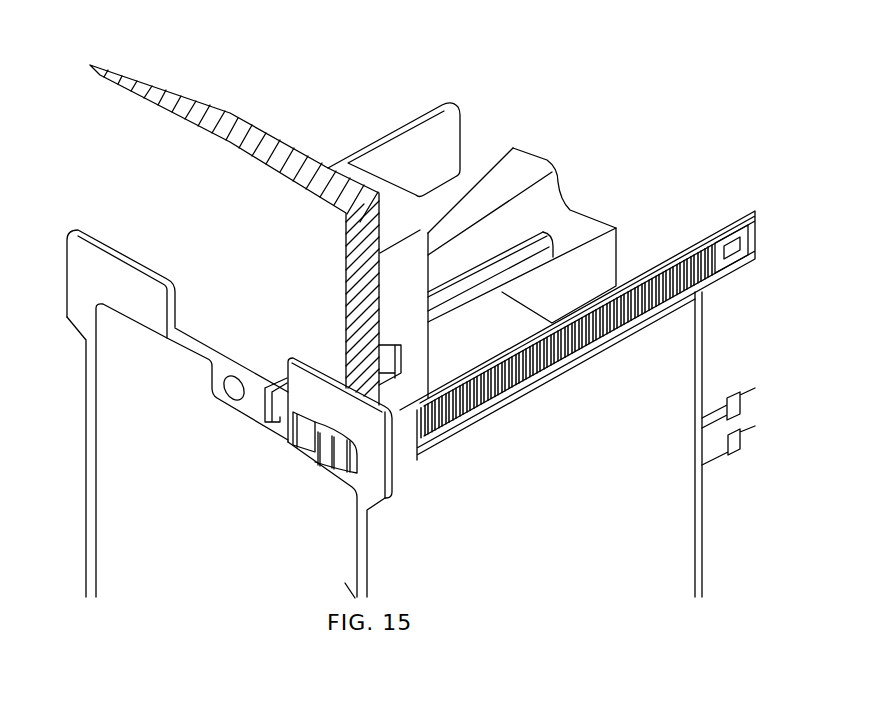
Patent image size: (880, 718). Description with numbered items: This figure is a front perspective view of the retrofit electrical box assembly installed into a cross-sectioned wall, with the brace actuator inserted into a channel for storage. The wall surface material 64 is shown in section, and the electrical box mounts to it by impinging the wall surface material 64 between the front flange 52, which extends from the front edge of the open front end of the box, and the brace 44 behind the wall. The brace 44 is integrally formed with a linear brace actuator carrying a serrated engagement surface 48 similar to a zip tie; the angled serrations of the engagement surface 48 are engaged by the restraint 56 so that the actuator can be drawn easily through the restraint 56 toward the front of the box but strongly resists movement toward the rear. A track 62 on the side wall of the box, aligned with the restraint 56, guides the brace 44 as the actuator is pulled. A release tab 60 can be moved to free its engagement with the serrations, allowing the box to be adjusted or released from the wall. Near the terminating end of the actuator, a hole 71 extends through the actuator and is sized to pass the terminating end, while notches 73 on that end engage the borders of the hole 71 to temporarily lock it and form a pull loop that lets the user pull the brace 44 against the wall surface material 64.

The brace 44 is at (407, 272).
The serrated engagement surface 48 is at (692, 258).
The front flange 52 is at (339, 408).
The restraint 56 is at (262, 443).
The release tab 60 is at (300, 425).
The track 62 is at (543, 242).
The wall surface material 64 is at (237, 180).
The hole 71 is at (732, 247).
The notch 73 is at (733, 438).